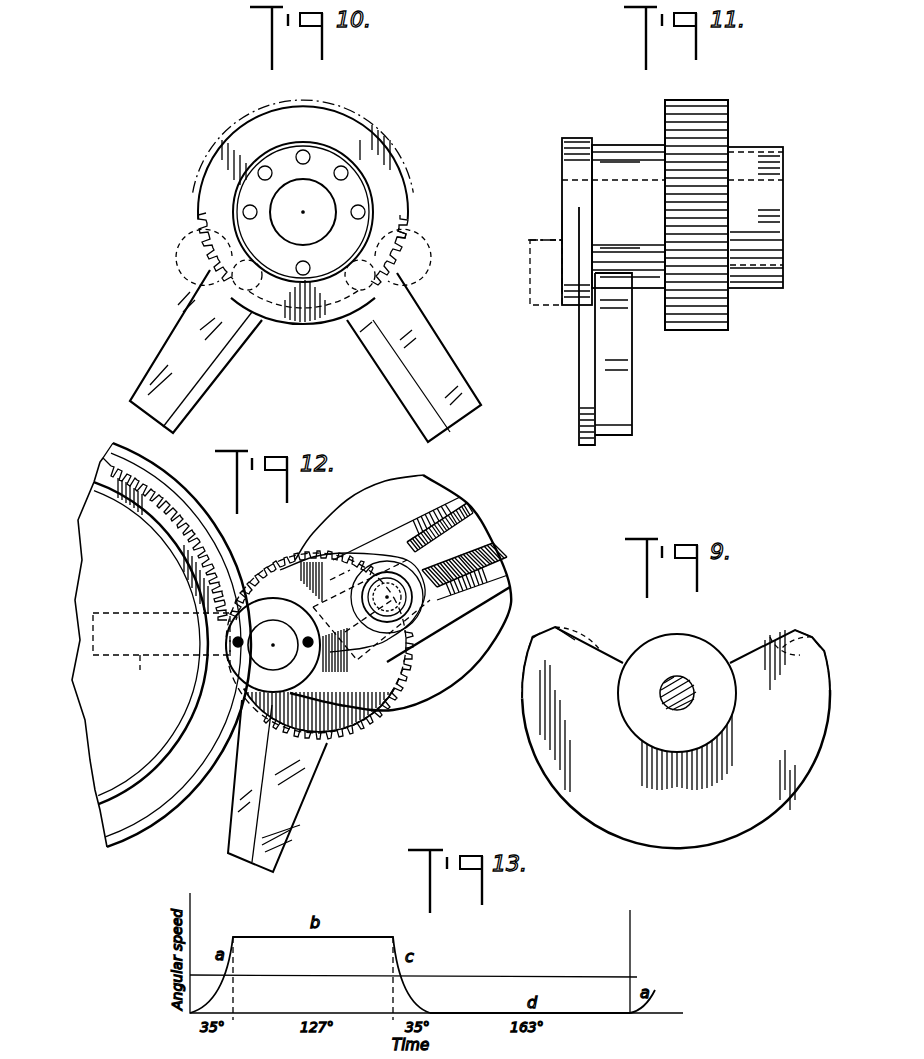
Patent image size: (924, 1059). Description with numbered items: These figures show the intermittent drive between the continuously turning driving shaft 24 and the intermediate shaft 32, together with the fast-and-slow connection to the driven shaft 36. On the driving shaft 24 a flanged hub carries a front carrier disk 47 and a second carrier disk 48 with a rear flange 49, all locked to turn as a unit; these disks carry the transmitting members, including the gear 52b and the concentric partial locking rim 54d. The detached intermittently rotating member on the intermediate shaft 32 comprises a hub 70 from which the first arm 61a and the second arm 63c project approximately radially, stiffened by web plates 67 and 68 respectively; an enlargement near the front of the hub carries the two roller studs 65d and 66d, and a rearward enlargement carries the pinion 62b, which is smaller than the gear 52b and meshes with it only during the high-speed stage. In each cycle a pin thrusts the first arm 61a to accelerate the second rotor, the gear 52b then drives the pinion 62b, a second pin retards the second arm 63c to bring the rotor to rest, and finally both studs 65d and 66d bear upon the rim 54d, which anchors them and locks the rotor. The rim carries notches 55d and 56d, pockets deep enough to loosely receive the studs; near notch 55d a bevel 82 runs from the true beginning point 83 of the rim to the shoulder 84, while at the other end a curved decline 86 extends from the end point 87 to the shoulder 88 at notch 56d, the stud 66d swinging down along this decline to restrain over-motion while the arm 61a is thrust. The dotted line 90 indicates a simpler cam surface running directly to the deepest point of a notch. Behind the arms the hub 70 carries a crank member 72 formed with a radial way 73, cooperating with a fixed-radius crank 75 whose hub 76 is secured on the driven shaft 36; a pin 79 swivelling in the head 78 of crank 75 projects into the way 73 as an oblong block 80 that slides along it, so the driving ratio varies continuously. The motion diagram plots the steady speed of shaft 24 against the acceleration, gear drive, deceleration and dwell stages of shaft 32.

In FIG. 9, the driving shaft 24 is at (672, 678).
In FIG. 13, the driving shaft 24 is at (530, 996).
In FIG. 13, the intermediate shaft 32 is at (422, 975).
In FIG. 12, the driven shaft 36 is at (278, 660).
In FIG. 9, the front carrier disk 47 is at (690, 803).
In FIG. 12, the second carrier disk 48 is at (132, 590).
In FIG. 12, the rear flange 49 is at (142, 523).
In FIG. 12, the gear 52b is at (115, 462).
In FIG. 9, the locking rim 54d is at (532, 755).
In FIG. 9, the rim notch 55d is at (812, 636).
In FIG. 9, the rim notch 56d is at (555, 627).
In FIG. 10, the first arm 61a is at (200, 357).
In FIG. 11, the first arm 61a is at (622, 370).
In FIG. 12, the first arm 61a is at (137, 650).
In FIG. 10, the pinion 62b is at (200, 246).
In FIG. 11, the pinion 62b is at (713, 93).
In FIG. 12, the pinion 62b is at (380, 728).
In FIG. 12, the second arm 63c is at (262, 838).
In FIG. 10, the stud 65d is at (410, 247).
In FIG. 10, the stud 66d is at (205, 288).
In FIG. 11, the stud 66d is at (530, 290).
In FIG. 10, the web plate 67 is at (210, 388).
In FIG. 11, the web plate 67 is at (582, 362).
In FIG. 12, the web plate 67 is at (155, 682).
In FIG. 12, the web plate 68 is at (310, 778).
In FIG. 11, the hub 70 is at (615, 150).
In FIG. 12, the crank member 72 is at (512, 590).
In FIG. 12, the radial way 73 is at (472, 528).
In FIG. 12, the crank 75 is at (332, 555).
In FIG. 12, the hub 76 is at (278, 603).
In FIG. 12, the head 78 is at (401, 614).
In FIG. 12, the pin 79 is at (407, 612).
In FIG. 12, the oblong block 80 is at (465, 571).
In FIG. 9, the bevel 82 is at (825, 658).
In FIG. 9, the beginning point 83 is at (828, 692).
In FIG. 9, the shoulder 84 is at (816, 642).
In FIG. 9, the decline 86 is at (522, 658).
In FIG. 9, the end point 87 is at (522, 693).
In FIG. 9, the shoulder 88 is at (540, 636).
In FIG. 9, the cam surface 90 is at (570, 635).